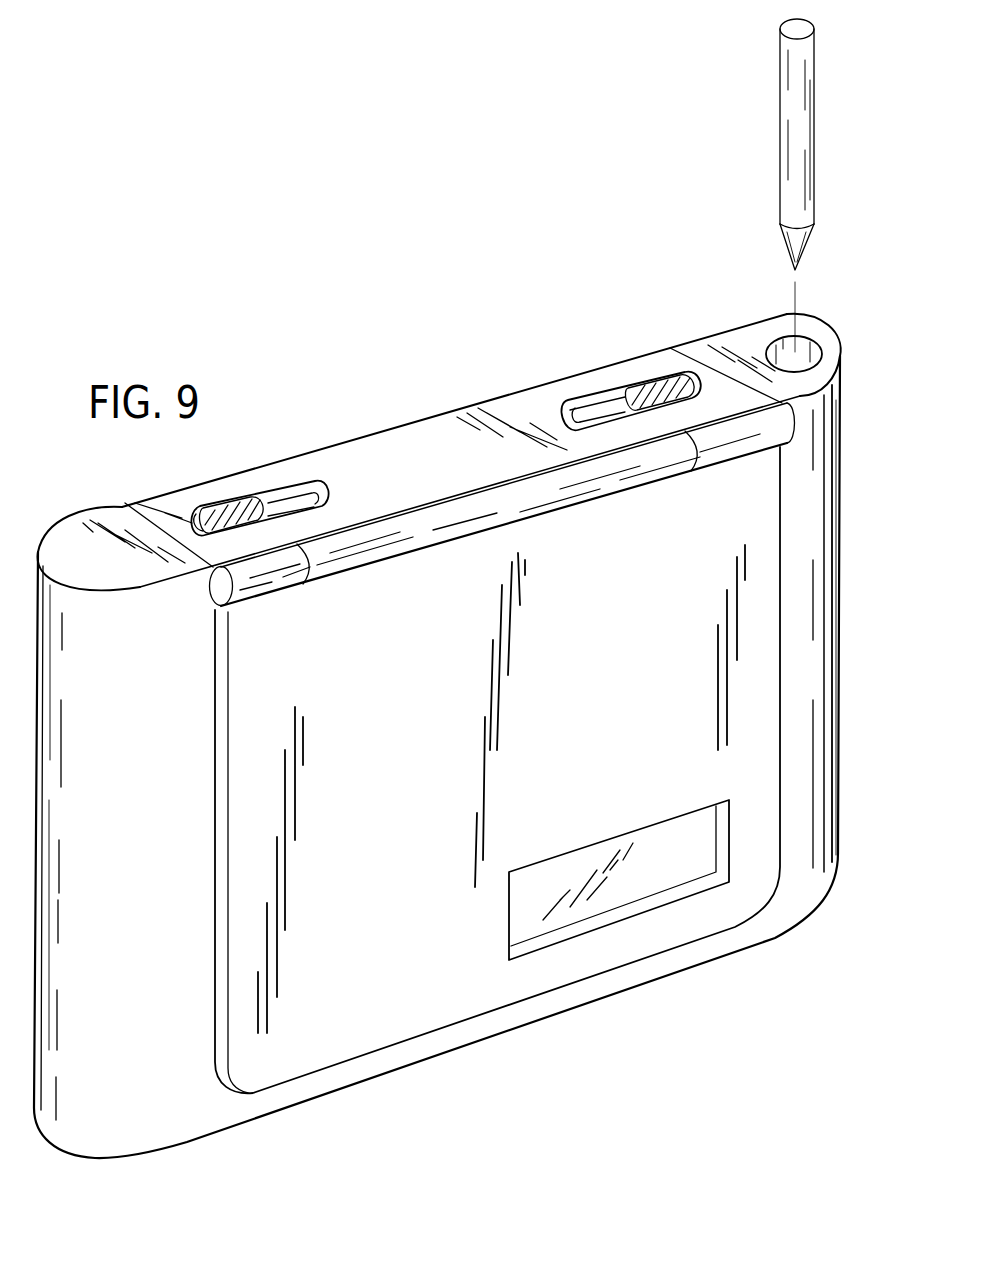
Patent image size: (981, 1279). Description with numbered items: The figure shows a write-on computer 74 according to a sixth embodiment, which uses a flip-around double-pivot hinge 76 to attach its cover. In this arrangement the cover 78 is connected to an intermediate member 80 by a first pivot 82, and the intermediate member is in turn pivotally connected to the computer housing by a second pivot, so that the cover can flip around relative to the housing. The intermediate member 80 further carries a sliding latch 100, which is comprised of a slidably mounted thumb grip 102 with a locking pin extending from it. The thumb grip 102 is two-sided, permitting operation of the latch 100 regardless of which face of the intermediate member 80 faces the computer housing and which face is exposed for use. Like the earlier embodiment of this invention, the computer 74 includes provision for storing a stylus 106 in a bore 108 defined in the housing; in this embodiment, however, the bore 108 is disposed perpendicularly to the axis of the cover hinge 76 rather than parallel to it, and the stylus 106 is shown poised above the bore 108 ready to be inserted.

The write-on computer 74 is at (502, 373).
The flip-around double-pivot hinge 76 is at (362, 443).
The cover 78 is at (381, 939).
The intermediate member 80 is at (482, 417).
The first pivot 82 is at (280, 593).
The sliding latch 100 is at (296, 483).
The thumb grip 102 is at (240, 502).
The stylus 106 is at (782, 142).
The bore 108 is at (783, 347).